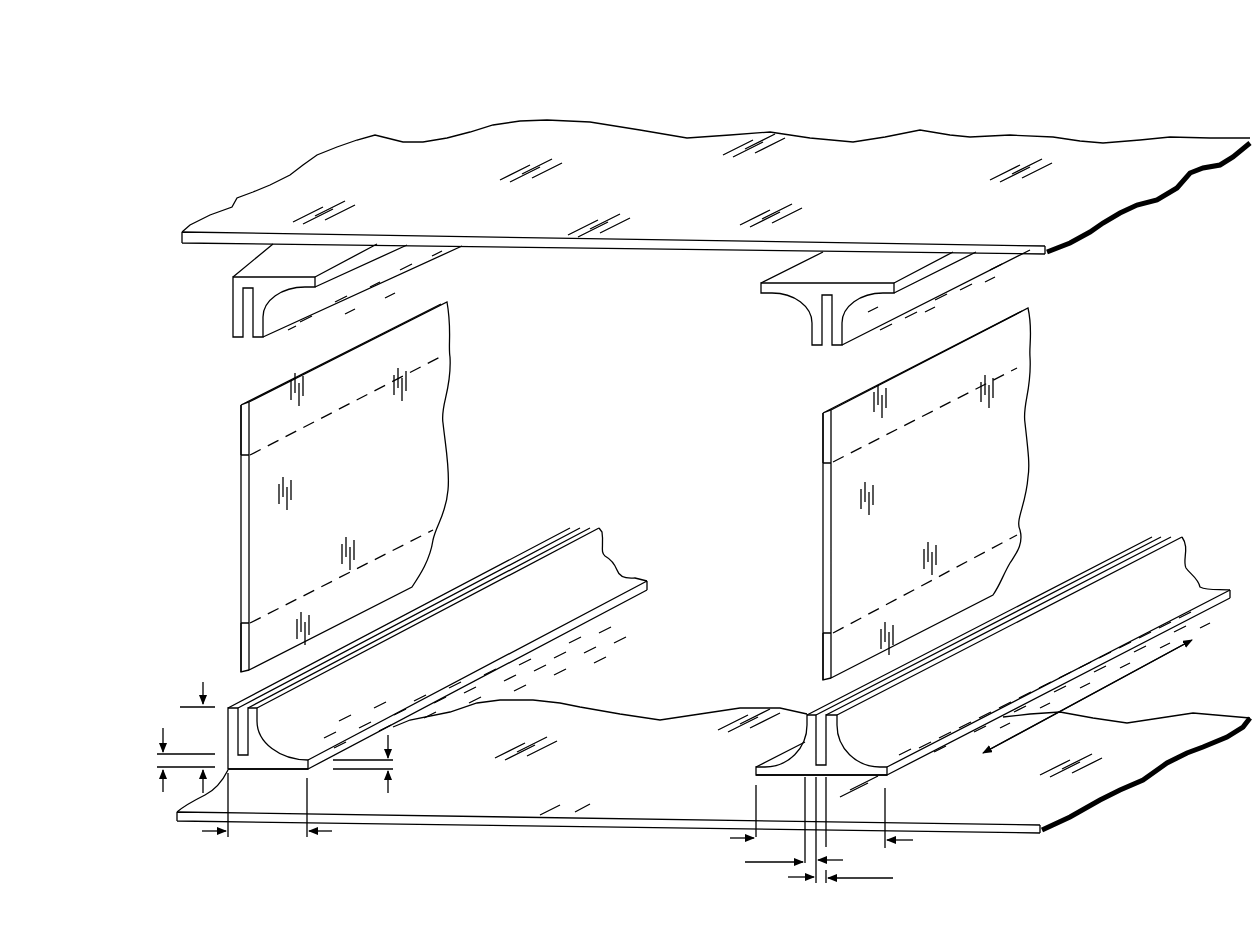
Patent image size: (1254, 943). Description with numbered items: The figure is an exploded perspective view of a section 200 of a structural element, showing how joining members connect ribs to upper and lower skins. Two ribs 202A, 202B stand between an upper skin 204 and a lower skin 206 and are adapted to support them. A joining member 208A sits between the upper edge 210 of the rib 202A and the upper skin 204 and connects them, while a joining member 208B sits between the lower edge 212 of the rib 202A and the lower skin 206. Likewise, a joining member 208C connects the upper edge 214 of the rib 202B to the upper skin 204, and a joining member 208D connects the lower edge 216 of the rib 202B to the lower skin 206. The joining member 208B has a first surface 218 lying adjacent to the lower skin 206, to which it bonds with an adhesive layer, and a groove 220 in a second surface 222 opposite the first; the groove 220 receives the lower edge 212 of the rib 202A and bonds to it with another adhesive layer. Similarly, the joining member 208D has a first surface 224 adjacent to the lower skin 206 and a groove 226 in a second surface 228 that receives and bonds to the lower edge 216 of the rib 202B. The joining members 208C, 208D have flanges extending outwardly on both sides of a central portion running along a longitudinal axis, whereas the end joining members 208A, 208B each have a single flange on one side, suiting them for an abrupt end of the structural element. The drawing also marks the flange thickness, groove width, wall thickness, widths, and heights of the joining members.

The section 200 is at (318, 106).
The upper skin 204 is at (232, 205).
The lower skin 206 is at (970, 833).
The joining member 208A is at (233, 292).
The joining member 208B is at (575, 603).
The joining member 208C is at (772, 293).
The joining member 208D is at (885, 747).
The rib 202A is at (241, 595).
The rib 202B is at (823, 487).
The upper edge 210 is at (240, 437).
The lower edge 212 is at (240, 653).
The upper edge 214 is at (823, 437).
The lower edge 216 is at (822, 668).
The first surface 218 is at (295, 772).
The groove 220 is at (595, 518).
The second surface 222 is at (582, 527).
The first surface 224 is at (783, 777).
The groove 226 is at (1165, 532).
The second surface 228 is at (1173, 537).